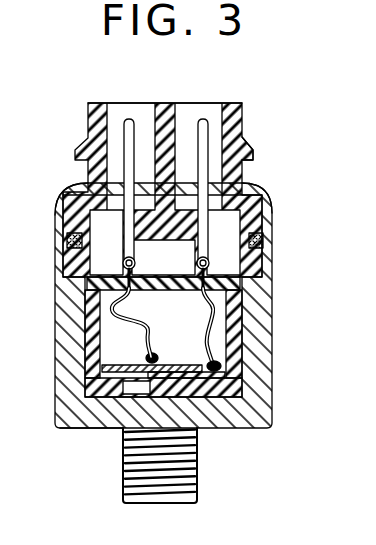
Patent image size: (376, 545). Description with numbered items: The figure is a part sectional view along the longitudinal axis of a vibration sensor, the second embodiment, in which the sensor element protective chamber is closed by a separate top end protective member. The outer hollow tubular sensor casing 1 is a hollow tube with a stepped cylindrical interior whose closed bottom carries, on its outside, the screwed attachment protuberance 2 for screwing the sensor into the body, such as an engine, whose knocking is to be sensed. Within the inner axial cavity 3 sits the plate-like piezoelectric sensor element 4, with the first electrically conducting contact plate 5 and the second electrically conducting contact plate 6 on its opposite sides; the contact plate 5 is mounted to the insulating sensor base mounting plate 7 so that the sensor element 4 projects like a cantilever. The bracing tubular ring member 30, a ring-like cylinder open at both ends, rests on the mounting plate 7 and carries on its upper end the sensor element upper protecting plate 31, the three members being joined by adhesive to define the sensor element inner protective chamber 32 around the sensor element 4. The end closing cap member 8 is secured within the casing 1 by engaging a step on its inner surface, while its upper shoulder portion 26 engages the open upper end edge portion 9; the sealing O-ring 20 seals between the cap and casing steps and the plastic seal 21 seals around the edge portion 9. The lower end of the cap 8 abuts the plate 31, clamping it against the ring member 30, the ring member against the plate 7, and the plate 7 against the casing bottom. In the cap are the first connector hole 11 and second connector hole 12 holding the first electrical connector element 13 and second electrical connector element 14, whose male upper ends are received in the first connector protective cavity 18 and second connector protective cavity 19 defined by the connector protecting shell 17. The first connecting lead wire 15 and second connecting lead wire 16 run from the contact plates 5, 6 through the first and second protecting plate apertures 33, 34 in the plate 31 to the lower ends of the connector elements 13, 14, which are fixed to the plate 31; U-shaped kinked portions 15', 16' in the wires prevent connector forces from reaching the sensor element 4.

The outer hollow tubular sensor casing 1 is at (266, 358).
The screwed attachment protuberance 2 is at (194, 480).
The inner axial cavity 3 is at (68, 362).
The sensor element 4 is at (95, 426).
The first electrically conducting contact plate 5 is at (204, 427).
The second electrically conducting contact plate 6 is at (172, 362).
The insulating sensor base mounting plate 7 is at (229, 426).
The end closing cap member 8 is at (262, 210).
The open upper end edge portion 9 is at (259, 202).
The first connector hole 11 is at (199, 226).
The second connector hole 12 is at (124, 226).
The first electrical connector element 13 is at (202, 118).
The second electrical connector element 14 is at (128, 118).
The first connecting lead wire 15 is at (196, 380).
The kinked portion 15' is at (195, 329).
The second connecting lead wire 16 is at (125, 322).
The kinked portion 16' is at (130, 324).
The connector protecting shell 17 is at (236, 103).
The first connector protective cavity 18 is at (233, 131).
The second connector protective cavity 19 is at (98, 130).
The sealing O-ring 20 is at (258, 245).
The plastic seal 21 is at (254, 182).
The upper shoulder portion 26 is at (64, 205).
The bracing tubular ring member 30 is at (241, 316).
The sensor element upper protecting plate 31 is at (168, 280).
The sensor element inner protective chamber 32 is at (155, 316).
The first protecting plate aperture 33 is at (243, 286).
The second protecting plate aperture 34 is at (89, 285).